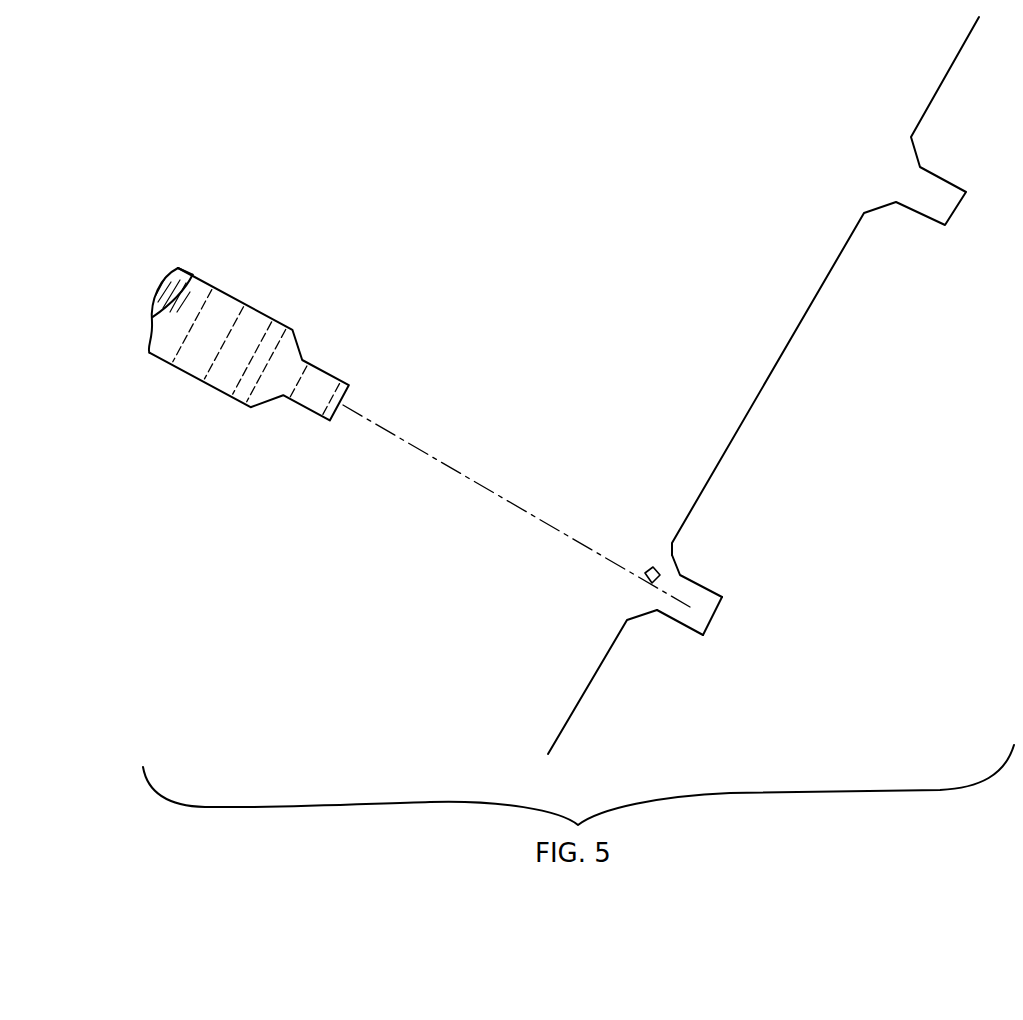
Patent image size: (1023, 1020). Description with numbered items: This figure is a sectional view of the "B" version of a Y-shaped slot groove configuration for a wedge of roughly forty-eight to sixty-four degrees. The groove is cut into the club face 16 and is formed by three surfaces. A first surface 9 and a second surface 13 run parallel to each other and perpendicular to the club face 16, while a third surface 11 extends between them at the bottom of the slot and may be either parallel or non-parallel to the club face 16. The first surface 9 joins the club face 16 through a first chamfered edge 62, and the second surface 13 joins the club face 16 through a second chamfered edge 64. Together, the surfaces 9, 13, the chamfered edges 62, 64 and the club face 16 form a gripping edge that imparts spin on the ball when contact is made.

The club face 16 is at (710, 478).
The second surface 13 is at (715, 589).
The third surface 11 is at (717, 615).
The first surface 9 is at (687, 625).
The first chamfered edge 62 is at (634, 616).
The second chamfered edge 64 is at (670, 557).